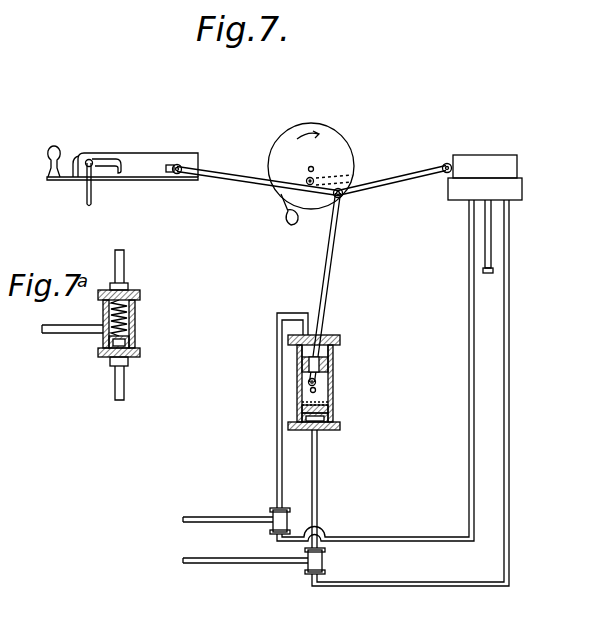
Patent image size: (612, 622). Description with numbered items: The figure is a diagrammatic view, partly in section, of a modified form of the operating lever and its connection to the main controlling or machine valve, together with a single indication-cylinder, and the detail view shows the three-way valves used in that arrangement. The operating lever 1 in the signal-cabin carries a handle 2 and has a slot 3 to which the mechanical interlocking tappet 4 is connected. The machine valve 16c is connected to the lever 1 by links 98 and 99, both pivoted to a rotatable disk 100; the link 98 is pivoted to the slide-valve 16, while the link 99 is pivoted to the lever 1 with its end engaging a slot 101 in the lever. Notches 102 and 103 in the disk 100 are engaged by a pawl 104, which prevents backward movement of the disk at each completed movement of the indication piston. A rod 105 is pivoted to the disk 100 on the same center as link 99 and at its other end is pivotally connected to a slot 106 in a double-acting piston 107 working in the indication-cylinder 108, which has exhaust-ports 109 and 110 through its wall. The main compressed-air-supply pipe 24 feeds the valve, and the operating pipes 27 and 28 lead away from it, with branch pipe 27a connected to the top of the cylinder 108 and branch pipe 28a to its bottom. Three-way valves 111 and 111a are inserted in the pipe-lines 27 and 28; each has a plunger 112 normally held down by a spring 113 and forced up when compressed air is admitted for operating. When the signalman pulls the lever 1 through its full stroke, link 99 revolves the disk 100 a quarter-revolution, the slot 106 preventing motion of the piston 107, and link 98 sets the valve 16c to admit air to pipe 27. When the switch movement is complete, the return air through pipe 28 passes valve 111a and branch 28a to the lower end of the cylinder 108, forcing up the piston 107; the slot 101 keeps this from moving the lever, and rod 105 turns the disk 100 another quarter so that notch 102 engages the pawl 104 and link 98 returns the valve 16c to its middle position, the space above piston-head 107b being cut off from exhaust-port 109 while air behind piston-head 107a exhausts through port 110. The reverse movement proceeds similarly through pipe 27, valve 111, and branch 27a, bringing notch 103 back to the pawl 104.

In FIG. 7, the operating lever 1 is at (183, 154).
In FIG. 7, the handle 2 is at (53, 148).
In FIG. 7, the slot 3 is at (100, 160).
In FIG. 7, the interlocking tappet 4 is at (86, 192).
In FIG. 7, the slot 101 is at (175, 164).
In FIG. 7, the link 99 is at (220, 176).
In FIG. 7, the notch 102 is at (338, 140).
In FIG. 7, the rotatable disk 100 is at (310, 160).
In FIG. 7, the notch 103 is at (282, 200).
In FIG. 7, the pawl 104 is at (283, 216).
In FIG. 7, the link 98 is at (394, 174).
In FIG. 7, the rod 105 is at (331, 247).
In FIG. 7, the machine valve 16c is at (485, 166).
In FIG. 7, the slide-valve 16 is at (485, 189).
In FIG. 7, the main compressed-air-supply pipe 24 is at (488, 274).
In FIG. 7, the operating pipe 27 is at (468, 263).
In FIG. 7, the operating pipe 28 is at (510, 263).
In FIG. 7A, the operating pipe 28 is at (66, 334).
In FIG. 7, the branch pipe 27a is at (276, 410).
In FIG. 7, the branch pipe 28a is at (318, 461).
In FIG. 7A, the branch pipe 28a is at (124, 265).
In FIG. 7, the indication-cylinder 108 is at (297, 383).
In FIG. 7, the exhaust-port 109 is at (333, 356).
In FIG. 7, the piston-head 107b is at (328, 366).
In FIG. 7, the double-acting piston 107 is at (318, 381).
In FIG. 7, the slot 106 is at (318, 392).
In FIG. 7, the exhaust-port 110 is at (328, 405).
In FIG. 7, the piston-head 107a is at (333, 418).
In FIG. 7, the three-way valve 111 is at (287, 521).
In FIG. 7, the three-way valve 111a is at (322, 562).
In FIG. 7A, the plunger 112 is at (135, 341).
In FIG. 7A, the spring 113 is at (128, 315).